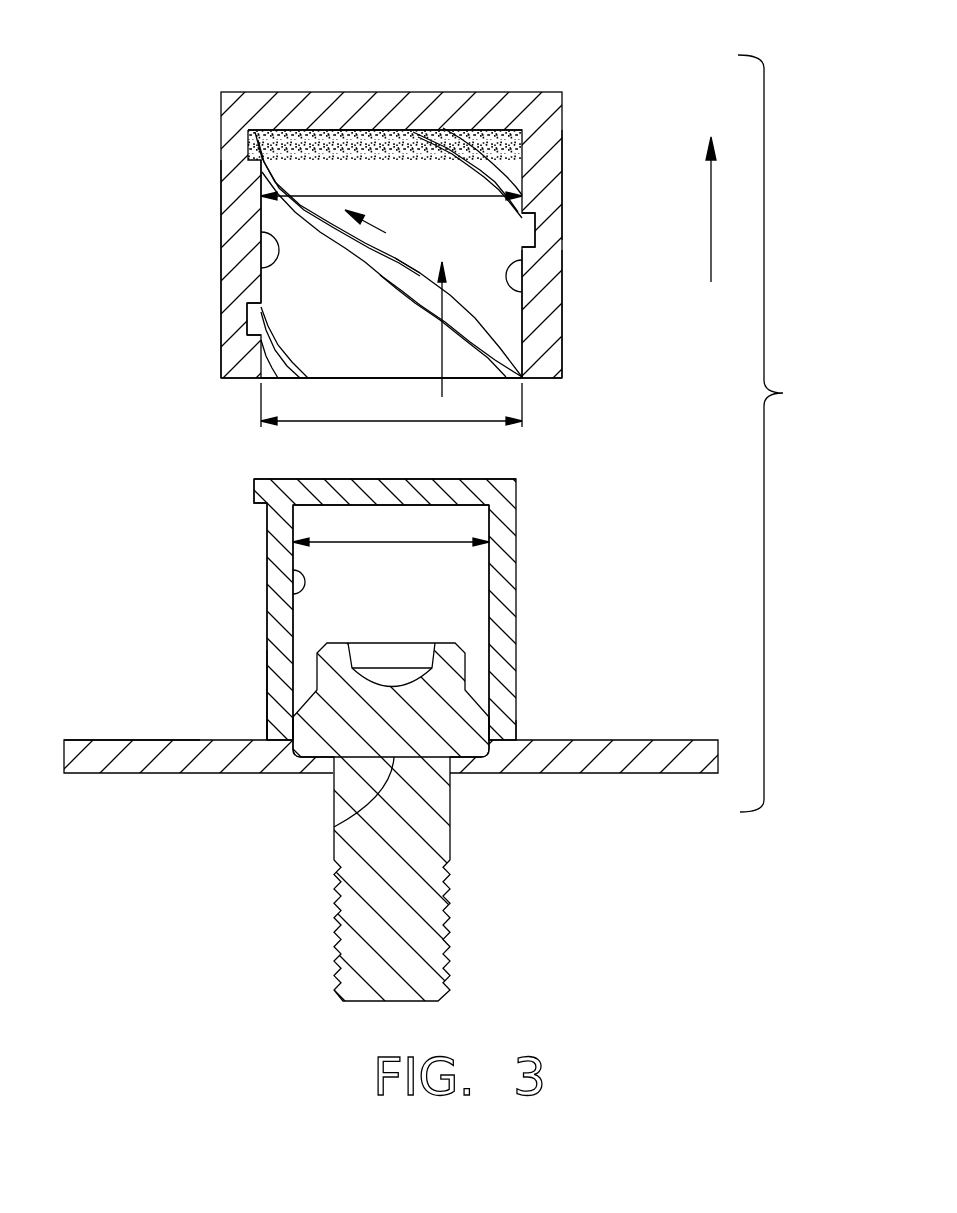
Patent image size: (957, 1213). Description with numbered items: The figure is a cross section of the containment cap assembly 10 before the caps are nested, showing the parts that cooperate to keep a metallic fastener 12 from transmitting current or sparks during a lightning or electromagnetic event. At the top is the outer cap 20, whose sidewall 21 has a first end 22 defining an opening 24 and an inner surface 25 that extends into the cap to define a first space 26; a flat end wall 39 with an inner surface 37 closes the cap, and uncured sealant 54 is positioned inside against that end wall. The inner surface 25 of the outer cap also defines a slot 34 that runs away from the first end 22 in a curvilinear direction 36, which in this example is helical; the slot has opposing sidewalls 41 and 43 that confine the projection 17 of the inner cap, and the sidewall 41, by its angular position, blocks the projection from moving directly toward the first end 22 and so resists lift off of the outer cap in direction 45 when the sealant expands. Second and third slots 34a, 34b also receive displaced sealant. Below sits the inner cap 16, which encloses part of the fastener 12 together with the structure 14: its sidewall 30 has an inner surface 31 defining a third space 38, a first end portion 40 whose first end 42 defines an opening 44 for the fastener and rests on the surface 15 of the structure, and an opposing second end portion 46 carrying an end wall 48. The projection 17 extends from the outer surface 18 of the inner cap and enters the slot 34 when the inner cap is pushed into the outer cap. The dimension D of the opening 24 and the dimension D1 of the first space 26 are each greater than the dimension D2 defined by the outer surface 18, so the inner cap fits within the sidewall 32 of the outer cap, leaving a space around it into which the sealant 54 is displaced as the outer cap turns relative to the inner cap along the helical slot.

The containment cap assembly 10 is at (783, 393).
The metallic fastener 12 is at (462, 913).
The structure 14 is at (655, 757).
The surface 15 is at (118, 740).
The inner cap 16 is at (266, 588).
The projection 17 is at (253, 492).
The outer surface 18 is at (267, 688).
The outer cap 20 is at (204, 147).
The sidewall 21 is at (560, 187).
The first end 22 is at (242, 380).
The opening 24 is at (369, 396).
The inner surface 25 is at (273, 260).
The first space 26 is at (442, 397).
The sidewall 30 is at (280, 653).
The inner surface 31 is at (255, 578).
The sidewall 32 is at (240, 292).
The slot 34 is at (392, 273).
The second slot 34a is at (248, 318).
The third slot 34b is at (538, 228).
The curvilinear direction 36 is at (386, 233).
The inner surface 37 is at (560, 128).
The third space 38 is at (458, 607).
The end wall 39 is at (410, 115).
The first end portion 40 is at (240, 722).
The sidewall 41 is at (344, 258).
The first end 42 is at (493, 745).
The sidewall 43 is at (415, 265).
The opening 44 is at (334, 828).
The direction 45 is at (711, 265).
The second end portion 46 is at (542, 502).
The end wall 48 is at (388, 479).
The uncured sealant 54 is at (349, 124).
The dimension D is at (382, 426).
The dimension D1 is at (327, 196).
The dimension D2 is at (392, 545).